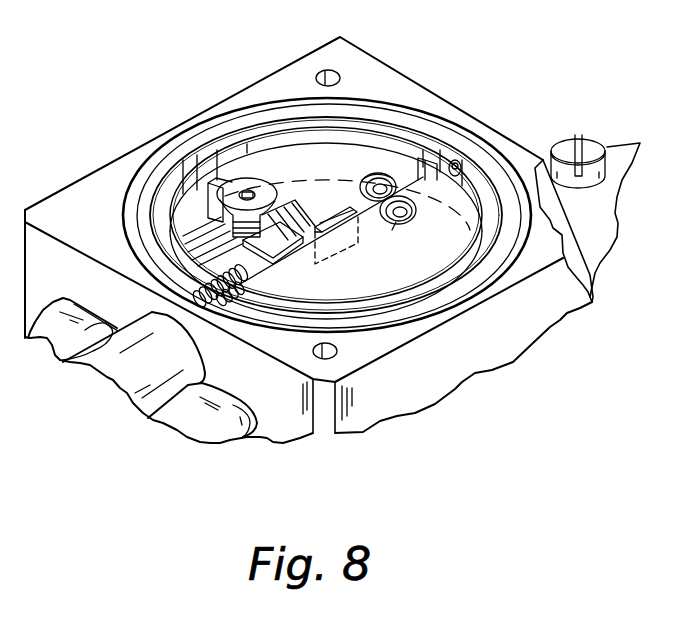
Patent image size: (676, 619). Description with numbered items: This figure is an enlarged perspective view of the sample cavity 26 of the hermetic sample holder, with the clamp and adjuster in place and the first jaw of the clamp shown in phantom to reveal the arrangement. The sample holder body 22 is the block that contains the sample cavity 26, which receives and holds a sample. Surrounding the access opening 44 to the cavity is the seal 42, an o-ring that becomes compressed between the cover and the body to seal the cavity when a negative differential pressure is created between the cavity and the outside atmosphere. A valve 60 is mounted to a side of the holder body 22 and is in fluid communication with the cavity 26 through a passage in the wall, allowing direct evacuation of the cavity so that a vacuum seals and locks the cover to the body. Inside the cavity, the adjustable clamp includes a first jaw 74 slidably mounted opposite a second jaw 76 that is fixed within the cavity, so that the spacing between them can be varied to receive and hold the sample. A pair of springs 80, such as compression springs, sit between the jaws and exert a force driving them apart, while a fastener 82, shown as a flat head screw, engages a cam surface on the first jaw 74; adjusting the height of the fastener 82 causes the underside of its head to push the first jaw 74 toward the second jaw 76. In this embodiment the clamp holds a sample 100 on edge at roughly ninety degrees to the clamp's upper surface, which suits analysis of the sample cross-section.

The sample holder body 22 is at (367, 68).
The sample cavity 26 is at (377, 141).
The seal 42 is at (458, 131).
The access opening 44 is at (462, 173).
The valve 60 is at (135, 378).
The first jaw 74 is at (283, 163).
The second jaw 76 is at (410, 268).
The springs 80 is at (393, 225).
The fastener 82 is at (257, 190).
The sample 100 is at (327, 208).